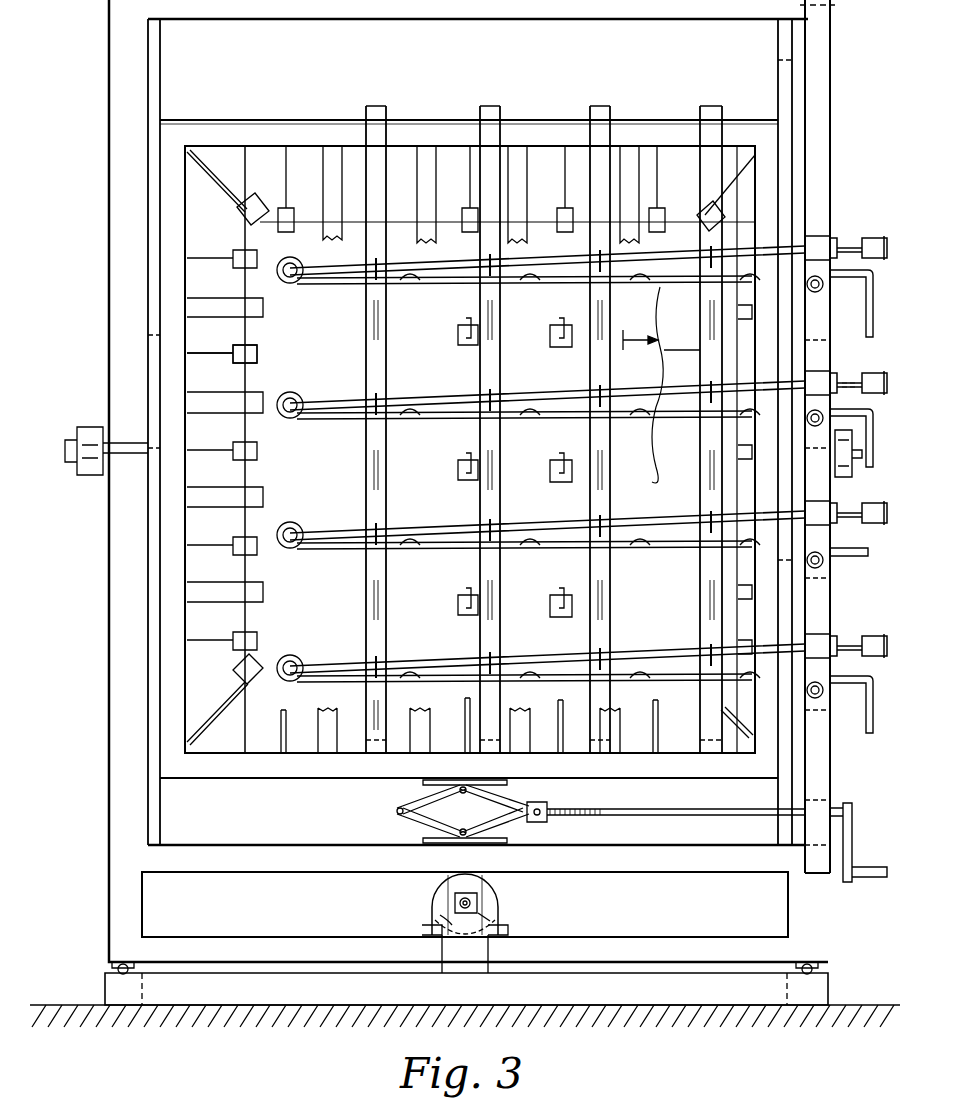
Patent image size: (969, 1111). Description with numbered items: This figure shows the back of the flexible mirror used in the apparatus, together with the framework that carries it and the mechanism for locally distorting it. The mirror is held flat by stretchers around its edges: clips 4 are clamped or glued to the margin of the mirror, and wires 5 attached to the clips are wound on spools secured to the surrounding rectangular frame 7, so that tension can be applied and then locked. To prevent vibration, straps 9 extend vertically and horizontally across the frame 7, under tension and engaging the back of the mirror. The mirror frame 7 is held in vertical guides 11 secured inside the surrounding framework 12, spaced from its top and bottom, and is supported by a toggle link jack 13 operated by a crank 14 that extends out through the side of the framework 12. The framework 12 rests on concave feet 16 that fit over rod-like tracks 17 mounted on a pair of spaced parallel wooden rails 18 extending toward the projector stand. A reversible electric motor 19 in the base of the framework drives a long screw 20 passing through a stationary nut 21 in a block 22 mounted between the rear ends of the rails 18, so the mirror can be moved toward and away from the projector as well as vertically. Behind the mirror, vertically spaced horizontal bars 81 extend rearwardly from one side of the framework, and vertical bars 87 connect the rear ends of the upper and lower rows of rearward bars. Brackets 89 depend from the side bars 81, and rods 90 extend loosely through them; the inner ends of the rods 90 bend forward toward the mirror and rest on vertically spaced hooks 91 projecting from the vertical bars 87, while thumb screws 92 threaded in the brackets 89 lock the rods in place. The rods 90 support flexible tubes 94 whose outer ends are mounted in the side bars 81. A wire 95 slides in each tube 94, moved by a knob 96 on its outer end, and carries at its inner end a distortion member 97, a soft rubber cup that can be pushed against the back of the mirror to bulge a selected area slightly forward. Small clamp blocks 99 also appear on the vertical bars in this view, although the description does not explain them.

The clips 4 is at (258, 356).
The wires 5 is at (230, 199).
The rectangular frame 7 is at (277, 123).
The straps 9 is at (430, 186).
The vertical guides 11 is at (160, 92).
The framework 12 is at (109, 207).
The toggle link jack 13 is at (405, 815).
The crank 14 is at (850, 840).
The concave feet 16 is at (113, 968).
The rod-like tracks 17 is at (815, 975).
The wooden rails 18 is at (826, 997).
The reversible electric motor 19 is at (494, 902).
The long screw 20 is at (455, 898).
The stationary nut 21 is at (490, 921).
The block 22 is at (452, 922).
The horizontal bars 81 is at (818, 380).
The vertical bars 87 is at (478, 430).
The brackets 89 is at (825, 292).
The rods 90 is at (555, 286).
The hooks 91 is at (490, 586).
The thumb screws 92 is at (822, 573).
The flexible tubes 94 is at (450, 398).
The wire 95 is at (850, 250).
The knob 96 is at (870, 640).
The distortion member 97 is at (300, 660).
The clamp block 99 is at (462, 326).